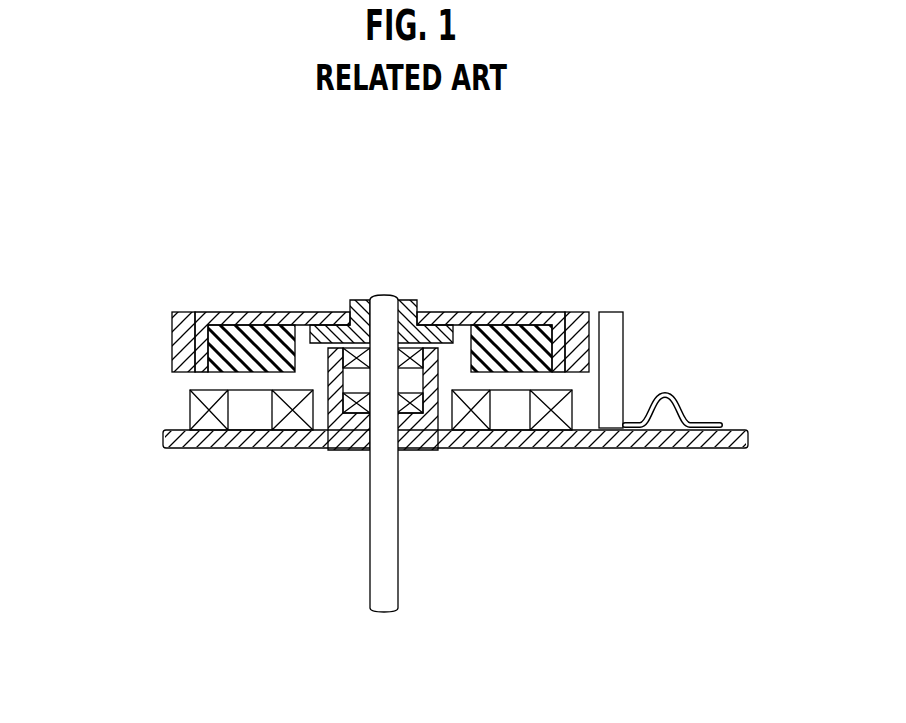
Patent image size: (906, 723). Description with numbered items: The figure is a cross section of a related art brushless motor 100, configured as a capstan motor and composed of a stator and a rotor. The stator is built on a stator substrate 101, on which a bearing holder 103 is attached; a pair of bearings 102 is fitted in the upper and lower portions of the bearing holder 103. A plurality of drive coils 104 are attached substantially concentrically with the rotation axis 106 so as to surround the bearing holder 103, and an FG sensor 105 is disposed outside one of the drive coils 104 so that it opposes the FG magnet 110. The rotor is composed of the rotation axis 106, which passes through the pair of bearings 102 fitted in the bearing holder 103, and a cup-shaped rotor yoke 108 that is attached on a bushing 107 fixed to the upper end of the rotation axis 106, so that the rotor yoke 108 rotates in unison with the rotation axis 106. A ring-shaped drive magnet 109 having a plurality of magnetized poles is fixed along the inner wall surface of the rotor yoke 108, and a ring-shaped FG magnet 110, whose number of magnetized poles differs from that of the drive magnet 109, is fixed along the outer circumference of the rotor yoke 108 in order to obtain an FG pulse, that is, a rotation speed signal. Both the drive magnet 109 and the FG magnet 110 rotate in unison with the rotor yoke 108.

The motor 100 is at (184, 240).
The stator substrate 101 is at (600, 450).
The bearings 102 is at (328, 377).
The bearing holder 103 is at (405, 422).
The drive coils 104 is at (212, 423).
The FG sensor 105 is at (613, 352).
The rotation axis 106 is at (387, 583).
The bushing 107 is at (400, 300).
The rotor yoke 108 is at (315, 310).
The drive magnet 109 is at (247, 320).
The FG magnet 110 is at (172, 350).